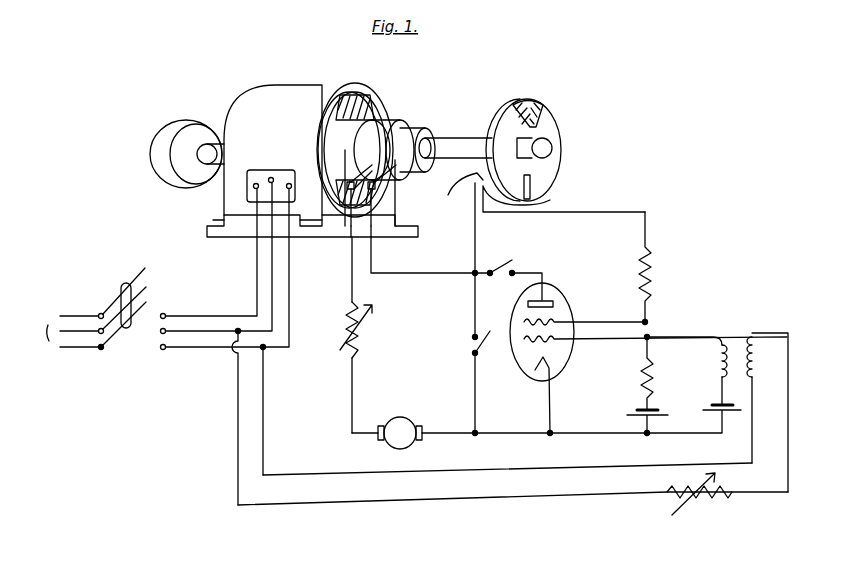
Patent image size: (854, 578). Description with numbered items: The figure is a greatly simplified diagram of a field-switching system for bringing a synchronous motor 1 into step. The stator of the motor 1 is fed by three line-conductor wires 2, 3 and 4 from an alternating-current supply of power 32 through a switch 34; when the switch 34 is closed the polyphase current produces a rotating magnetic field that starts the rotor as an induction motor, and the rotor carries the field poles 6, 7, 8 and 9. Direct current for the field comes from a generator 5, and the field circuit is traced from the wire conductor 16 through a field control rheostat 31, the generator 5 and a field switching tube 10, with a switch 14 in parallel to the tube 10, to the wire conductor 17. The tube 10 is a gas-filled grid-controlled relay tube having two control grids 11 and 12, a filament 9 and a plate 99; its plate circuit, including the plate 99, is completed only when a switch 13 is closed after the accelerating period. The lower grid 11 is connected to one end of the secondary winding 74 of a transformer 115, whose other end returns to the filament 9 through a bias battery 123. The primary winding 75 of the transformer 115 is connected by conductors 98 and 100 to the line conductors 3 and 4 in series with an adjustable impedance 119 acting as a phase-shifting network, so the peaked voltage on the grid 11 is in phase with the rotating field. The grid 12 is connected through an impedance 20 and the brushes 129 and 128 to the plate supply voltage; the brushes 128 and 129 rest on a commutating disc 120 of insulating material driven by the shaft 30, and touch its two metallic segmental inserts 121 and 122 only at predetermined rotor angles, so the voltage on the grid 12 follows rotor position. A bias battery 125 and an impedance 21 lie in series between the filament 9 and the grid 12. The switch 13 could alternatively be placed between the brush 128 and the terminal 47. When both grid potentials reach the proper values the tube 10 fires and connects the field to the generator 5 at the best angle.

The synchronous motor 1 is at (270, 100).
The line-conductor wire 2 is at (186, 313).
The line-conductor wire 3 is at (206, 330).
The line-conductor wire 4 is at (190, 345).
The generator 5 is at (401, 419).
The field pole 6 is at (380, 113).
The field pole 7 is at (378, 186).
The field pole 8 is at (345, 213).
The field pole / filament 9 is at (338, 98).
The field switching tube 10 is at (548, 292).
The control grid 11 is at (556, 341).
The control grid 12 is at (563, 318).
The switch 13 is at (499, 272).
The switch 14 is at (467, 339).
The wire conductor 16 is at (352, 275).
The wire conductor 17 is at (373, 256).
The impedance 20 is at (652, 273).
The impedance 21 is at (640, 372).
The shaft 30 is at (452, 134).
The field control rheostat 31 is at (360, 340).
The alternating-current supply of power 32 is at (67, 322).
The switch 34 is at (118, 286).
The terminal 47 is at (470, 275).
The secondary winding 74 is at (716, 345).
The primary winding 75 is at (758, 352).
The conductor 98 is at (460, 473).
The plate 99 is at (555, 302).
The conductor 100 is at (509, 498).
The transformer 115 is at (735, 332).
The adjustable impedance 119 is at (698, 505).
The commutating disc 120 is at (548, 128).
The segmental insert 121 is at (526, 101).
The segmental insert 122 is at (533, 190).
The bias battery 123 is at (712, 414).
The bias battery 125 is at (665, 414).
The brush 128 is at (452, 223).
The brush 129 is at (552, 205).